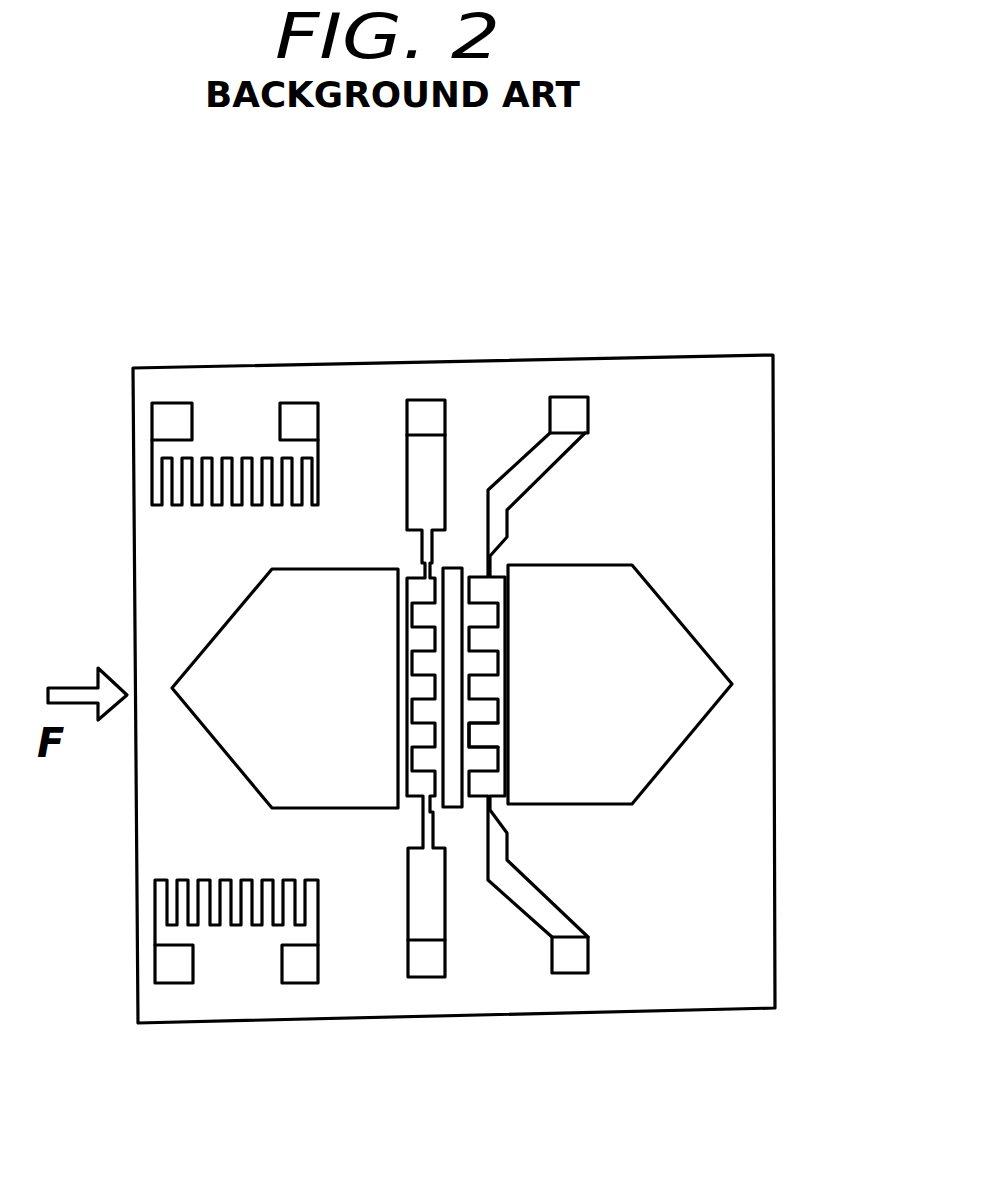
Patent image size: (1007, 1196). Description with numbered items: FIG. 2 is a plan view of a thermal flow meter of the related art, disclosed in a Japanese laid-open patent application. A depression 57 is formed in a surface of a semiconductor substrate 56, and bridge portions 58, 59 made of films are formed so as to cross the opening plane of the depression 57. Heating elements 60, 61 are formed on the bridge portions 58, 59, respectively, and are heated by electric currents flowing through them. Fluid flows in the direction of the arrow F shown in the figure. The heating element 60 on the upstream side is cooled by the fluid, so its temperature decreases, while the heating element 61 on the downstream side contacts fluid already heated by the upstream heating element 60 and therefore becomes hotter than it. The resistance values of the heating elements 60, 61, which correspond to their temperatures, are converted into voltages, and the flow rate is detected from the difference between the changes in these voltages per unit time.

The semiconductor substrate 56 is at (672, 357).
The depression 57 is at (662, 622).
The bridge portion 58 is at (412, 663).
The bridge portion 59 is at (483, 690).
The heating element 60 is at (412, 707).
The heating element 61 is at (483, 725).